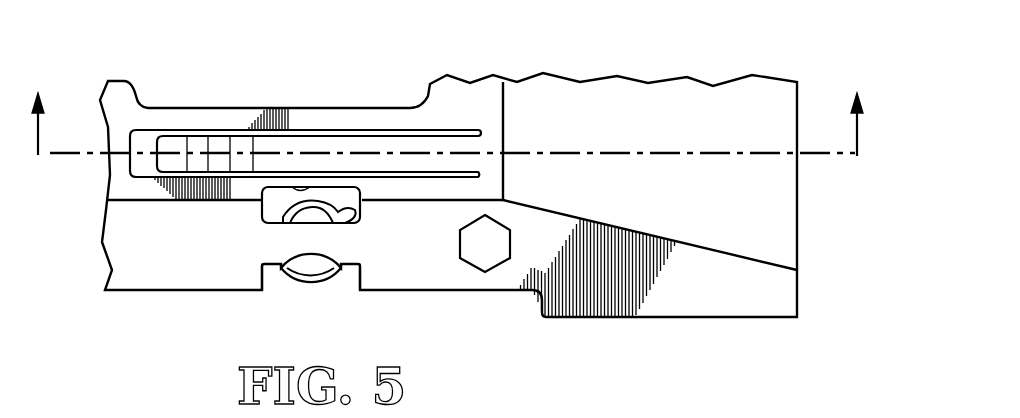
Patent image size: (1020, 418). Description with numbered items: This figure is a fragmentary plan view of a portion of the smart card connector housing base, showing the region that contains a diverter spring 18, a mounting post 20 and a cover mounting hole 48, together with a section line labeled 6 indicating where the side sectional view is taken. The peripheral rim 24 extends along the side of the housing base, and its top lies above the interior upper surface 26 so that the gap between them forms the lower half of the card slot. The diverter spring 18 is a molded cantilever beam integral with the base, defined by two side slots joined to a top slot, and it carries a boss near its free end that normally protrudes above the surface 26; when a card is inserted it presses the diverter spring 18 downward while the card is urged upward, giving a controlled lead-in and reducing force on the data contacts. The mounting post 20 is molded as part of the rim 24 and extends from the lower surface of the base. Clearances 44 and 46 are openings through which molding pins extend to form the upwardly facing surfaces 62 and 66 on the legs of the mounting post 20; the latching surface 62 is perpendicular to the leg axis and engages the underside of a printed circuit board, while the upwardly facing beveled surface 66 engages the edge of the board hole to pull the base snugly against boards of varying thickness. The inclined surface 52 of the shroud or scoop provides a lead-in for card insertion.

The section line 6- 6 is at (446, 113).
The diverter spring 18 is at (220, 147).
The mounting post 20 is at (300, 245).
The peripheral rim 24 is at (182, 259).
The interior upper surface 26 is at (177, 123).
The clearance 44 is at (300, 188).
The clearance 46 is at (272, 272).
The cover mounting hole 48 is at (478, 262).
The inclined surface 52 is at (712, 100).
The latching surface 62 is at (363, 210).
The upwardly facing beveled surface 66 is at (310, 283).